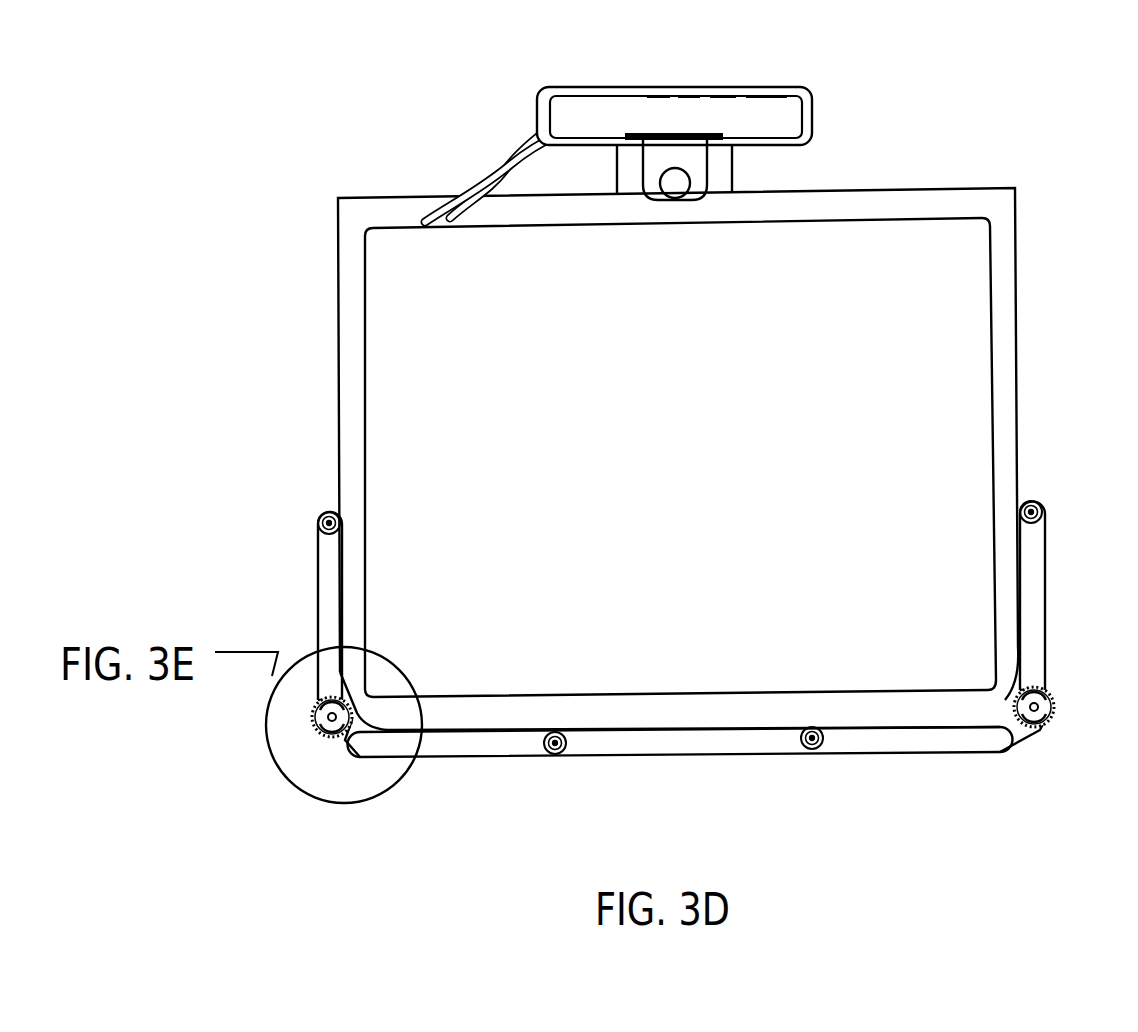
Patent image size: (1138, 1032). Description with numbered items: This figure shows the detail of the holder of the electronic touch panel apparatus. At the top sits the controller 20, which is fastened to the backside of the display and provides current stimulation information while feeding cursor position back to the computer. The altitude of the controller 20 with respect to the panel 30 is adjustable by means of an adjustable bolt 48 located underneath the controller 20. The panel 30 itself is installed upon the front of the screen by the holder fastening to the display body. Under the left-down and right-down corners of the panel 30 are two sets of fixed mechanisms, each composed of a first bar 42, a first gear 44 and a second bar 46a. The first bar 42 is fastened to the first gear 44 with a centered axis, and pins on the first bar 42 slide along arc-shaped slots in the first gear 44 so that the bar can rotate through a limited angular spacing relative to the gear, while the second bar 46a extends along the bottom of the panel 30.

The controller 20 is at (735, 115).
The panel 30 is at (838, 355).
The first bar 42 is at (328, 572).
The first gear 44 is at (317, 718).
The second bar 46a is at (460, 745).
The adjustable bolt 48 is at (680, 187).